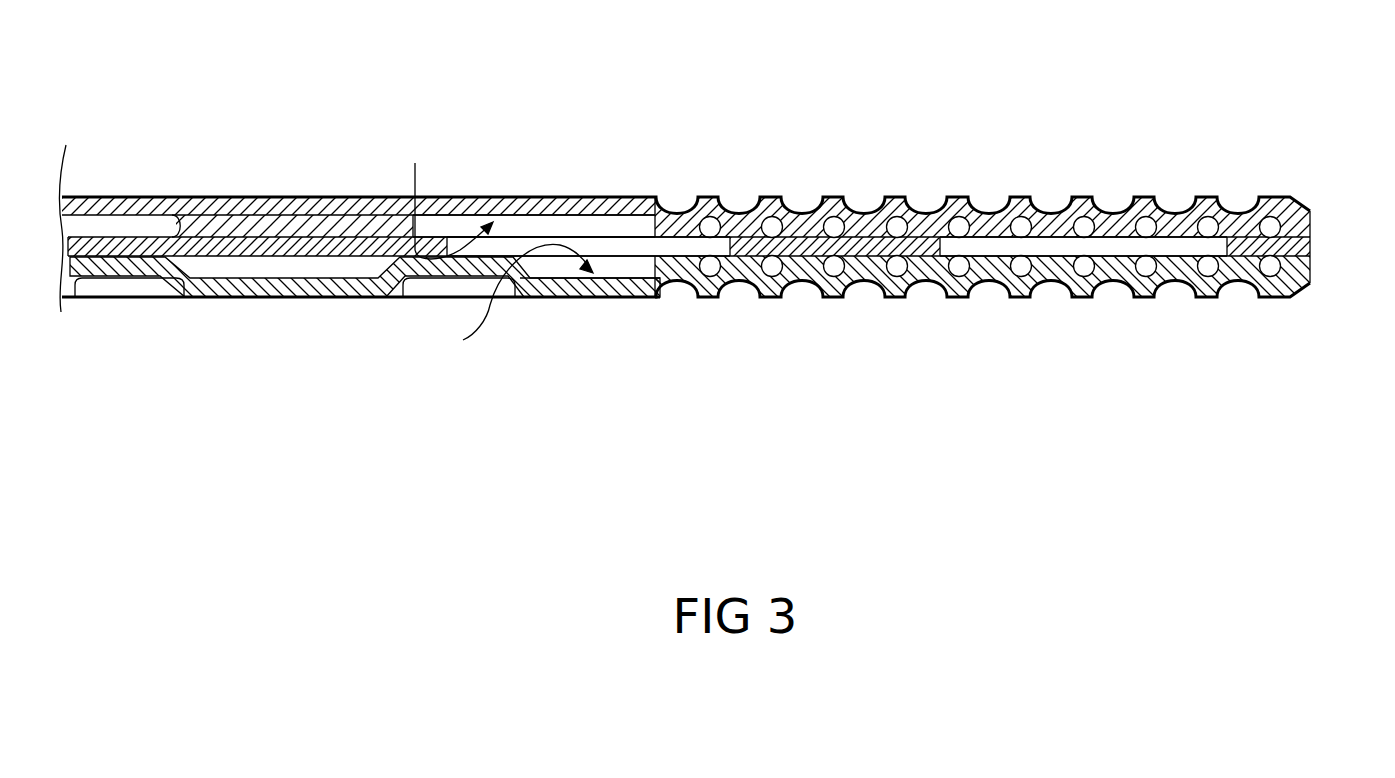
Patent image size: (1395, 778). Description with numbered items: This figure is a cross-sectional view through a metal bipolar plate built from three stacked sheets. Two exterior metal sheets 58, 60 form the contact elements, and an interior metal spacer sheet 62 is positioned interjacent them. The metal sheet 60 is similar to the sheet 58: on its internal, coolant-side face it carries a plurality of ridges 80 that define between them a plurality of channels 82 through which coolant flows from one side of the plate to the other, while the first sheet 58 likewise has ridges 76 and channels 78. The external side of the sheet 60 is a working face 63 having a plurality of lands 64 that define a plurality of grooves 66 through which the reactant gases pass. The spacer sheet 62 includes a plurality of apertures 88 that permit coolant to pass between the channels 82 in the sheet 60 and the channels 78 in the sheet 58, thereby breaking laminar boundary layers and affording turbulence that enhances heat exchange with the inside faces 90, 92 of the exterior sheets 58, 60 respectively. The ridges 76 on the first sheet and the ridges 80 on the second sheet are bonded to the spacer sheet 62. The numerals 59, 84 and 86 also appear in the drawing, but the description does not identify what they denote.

The metal sheet 58 is at (122, 197).
The distal shaft section 59 is at (613, 197).
The metal sheet 60 is at (277, 297).
The interior metal spacer sheet 62 is at (1310, 247).
The working face 63 is at (553, 302).
The lands 64 is at (707, 197).
The grooves 66 is at (740, 197).
The ridges 76 is at (668, 246).
The channels 78 is at (834, 216).
The ridges 80 is at (687, 285).
The channels 82 is at (765, 276).
The ribs 84 is at (833, 297).
The grooves 86 is at (925, 290).
The apertures 88 is at (1010, 247).
The inside face 90 is at (415, 200).
The inside face 92 is at (475, 333).